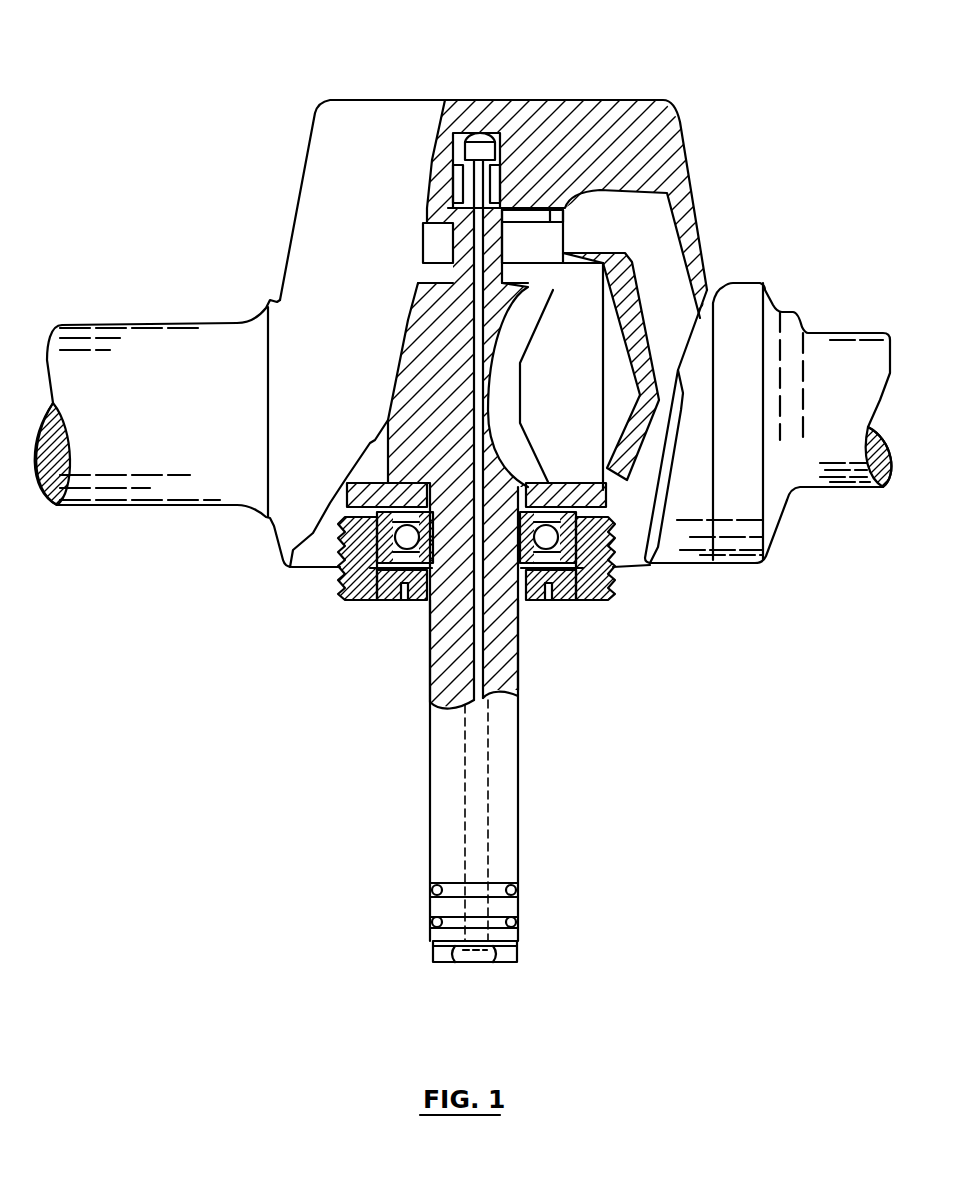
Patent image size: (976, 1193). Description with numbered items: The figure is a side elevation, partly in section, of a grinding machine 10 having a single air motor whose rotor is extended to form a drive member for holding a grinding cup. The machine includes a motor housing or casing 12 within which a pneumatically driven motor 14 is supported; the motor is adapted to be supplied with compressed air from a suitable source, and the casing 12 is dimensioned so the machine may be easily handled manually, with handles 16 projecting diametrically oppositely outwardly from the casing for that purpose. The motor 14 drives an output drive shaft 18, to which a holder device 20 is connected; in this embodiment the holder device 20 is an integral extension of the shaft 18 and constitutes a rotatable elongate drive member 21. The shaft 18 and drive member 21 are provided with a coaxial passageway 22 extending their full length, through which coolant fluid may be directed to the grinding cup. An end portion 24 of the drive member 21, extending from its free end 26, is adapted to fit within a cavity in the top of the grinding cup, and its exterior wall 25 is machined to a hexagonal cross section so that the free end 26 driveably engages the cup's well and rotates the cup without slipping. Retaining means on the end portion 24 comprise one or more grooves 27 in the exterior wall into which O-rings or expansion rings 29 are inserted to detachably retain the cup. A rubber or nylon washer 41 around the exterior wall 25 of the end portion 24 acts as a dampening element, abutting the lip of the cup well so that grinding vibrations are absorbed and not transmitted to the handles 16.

The grinding machine 10 is at (256, 84).
The motor housing or casing 12 is at (692, 178).
The pneumatically driven motor 14 is at (415, 310).
The handles 16 is at (183, 352).
The output drive shaft 18 is at (447, 665).
The holder device 20 is at (553, 765).
The rotatable elongate drive member 21 is at (430, 770).
The coaxial passageway 22 is at (478, 655).
The end portion 24 is at (553, 932).
The exterior wall 25 is at (517, 952).
The free end 26 is at (478, 963).
The grooves 27 is at (497, 882).
The O-rings or expansion rings 29 is at (516, 888).
The rubber or nylon washer 41 is at (433, 952).